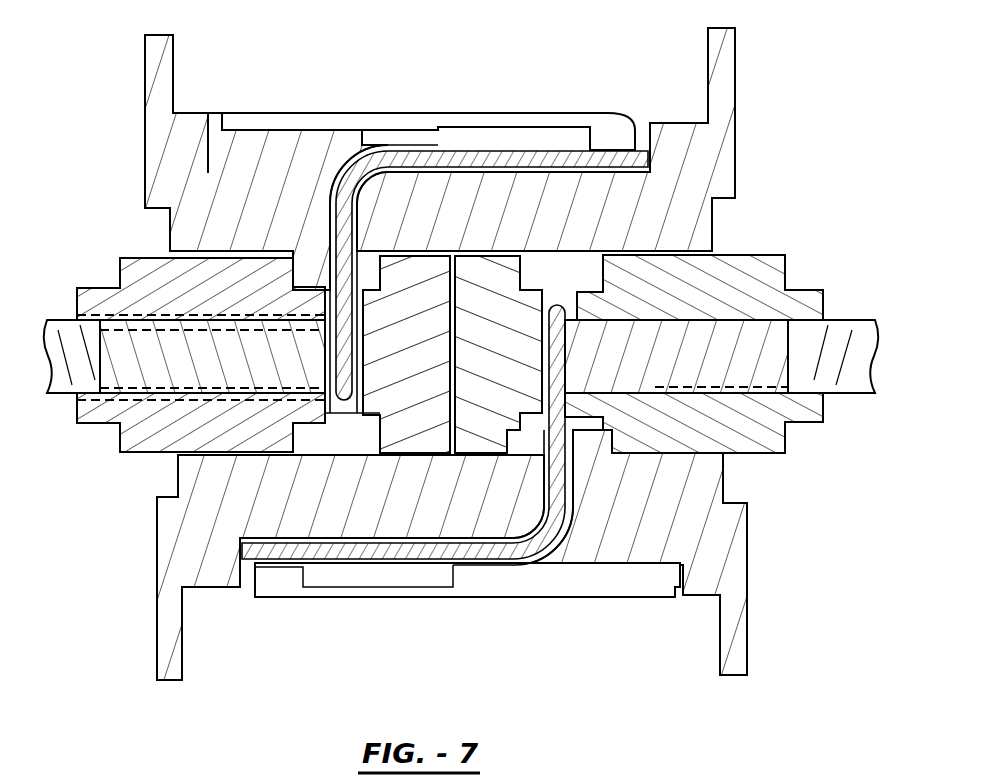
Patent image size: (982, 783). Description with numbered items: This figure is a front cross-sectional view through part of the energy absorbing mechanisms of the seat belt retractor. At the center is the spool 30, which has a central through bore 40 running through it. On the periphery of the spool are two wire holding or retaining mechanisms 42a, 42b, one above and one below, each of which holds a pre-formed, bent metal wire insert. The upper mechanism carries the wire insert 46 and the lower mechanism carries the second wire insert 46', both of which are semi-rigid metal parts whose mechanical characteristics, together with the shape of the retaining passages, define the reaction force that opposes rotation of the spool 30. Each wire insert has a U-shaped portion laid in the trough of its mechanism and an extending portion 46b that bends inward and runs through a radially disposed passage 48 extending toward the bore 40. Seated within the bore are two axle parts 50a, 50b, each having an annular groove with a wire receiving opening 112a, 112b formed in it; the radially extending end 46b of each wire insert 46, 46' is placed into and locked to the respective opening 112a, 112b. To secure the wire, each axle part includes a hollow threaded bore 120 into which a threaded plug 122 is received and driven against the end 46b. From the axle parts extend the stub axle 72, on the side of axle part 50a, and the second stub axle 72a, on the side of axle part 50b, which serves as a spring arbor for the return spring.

The spool 30 is at (182, 108).
The wire holding or retaining mechanism 42a is at (402, 113).
The second wire receiving and holding mechanism 42b is at (432, 603).
The pre-formed bent metal wire insert 46 is at (492, 208).
The extending portion of wire insert 46b is at (340, 370).
The second pre-formed wire insert 46' is at (412, 466).
The radially disposed passage 48 is at (328, 217).
The central through bore 40 is at (452, 325).
The wire receiving opening 112a is at (363, 325).
The wire receiving opening 112b is at (537, 328).
The hollow threaded bore 120 is at (128, 328).
The threaded plug 122 is at (212, 340).
The axle part 50a is at (150, 430).
The axle part 50b is at (743, 432).
The stub axle 72 is at (72, 340).
The second stub axle 72a is at (850, 357).